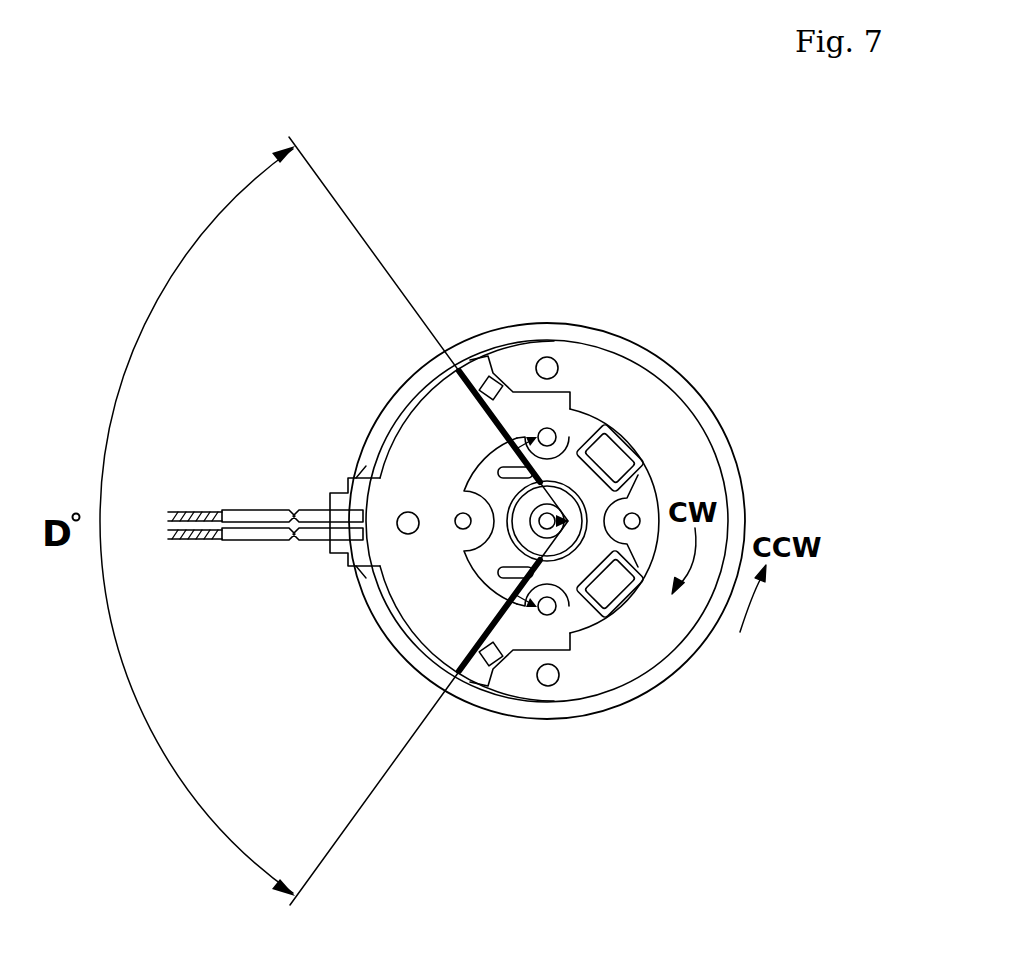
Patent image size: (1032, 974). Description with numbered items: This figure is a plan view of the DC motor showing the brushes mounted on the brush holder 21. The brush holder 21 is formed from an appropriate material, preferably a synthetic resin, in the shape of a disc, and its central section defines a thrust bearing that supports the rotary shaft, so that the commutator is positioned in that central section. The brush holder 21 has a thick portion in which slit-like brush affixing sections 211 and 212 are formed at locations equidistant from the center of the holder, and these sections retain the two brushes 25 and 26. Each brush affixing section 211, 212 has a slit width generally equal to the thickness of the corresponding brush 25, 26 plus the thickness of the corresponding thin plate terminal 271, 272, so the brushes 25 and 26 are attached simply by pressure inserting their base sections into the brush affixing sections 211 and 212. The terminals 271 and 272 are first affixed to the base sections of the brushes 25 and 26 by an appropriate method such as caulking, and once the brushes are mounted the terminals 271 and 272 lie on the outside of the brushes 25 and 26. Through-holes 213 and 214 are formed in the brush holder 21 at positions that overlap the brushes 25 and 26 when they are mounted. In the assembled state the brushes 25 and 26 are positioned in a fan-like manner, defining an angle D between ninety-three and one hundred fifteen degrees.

The brush holder 21 is at (660, 480).
The brush affixing section 211 is at (484, 373).
The brush affixing section 212 is at (476, 670).
The through-hole 213 is at (605, 432).
The through-hole 214 is at (580, 625).
The brush 25 is at (560, 432).
The brush 26 is at (558, 610).
The terminal 271 is at (476, 404).
The terminal 272 is at (476, 638).